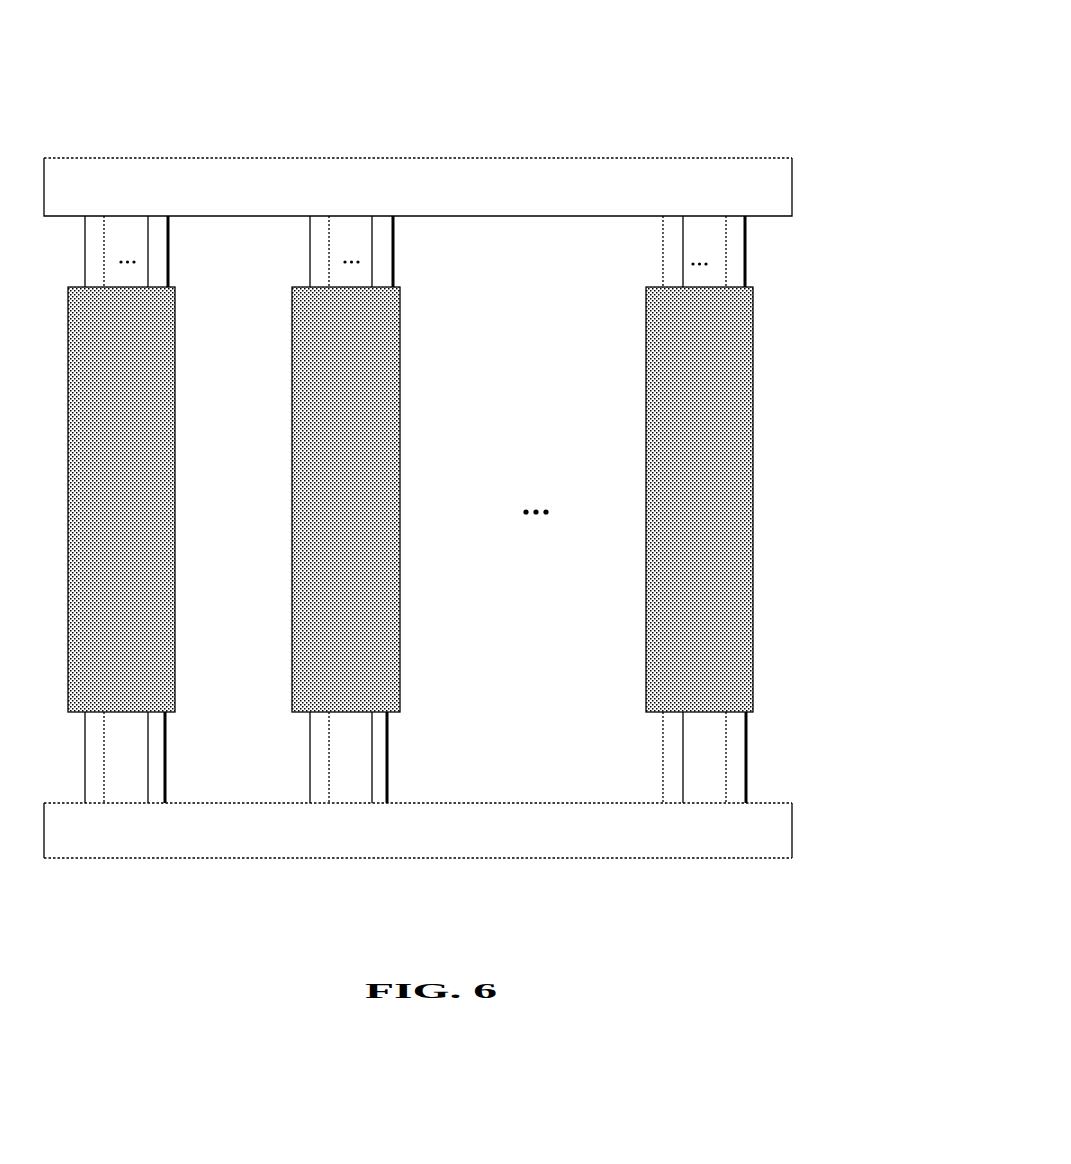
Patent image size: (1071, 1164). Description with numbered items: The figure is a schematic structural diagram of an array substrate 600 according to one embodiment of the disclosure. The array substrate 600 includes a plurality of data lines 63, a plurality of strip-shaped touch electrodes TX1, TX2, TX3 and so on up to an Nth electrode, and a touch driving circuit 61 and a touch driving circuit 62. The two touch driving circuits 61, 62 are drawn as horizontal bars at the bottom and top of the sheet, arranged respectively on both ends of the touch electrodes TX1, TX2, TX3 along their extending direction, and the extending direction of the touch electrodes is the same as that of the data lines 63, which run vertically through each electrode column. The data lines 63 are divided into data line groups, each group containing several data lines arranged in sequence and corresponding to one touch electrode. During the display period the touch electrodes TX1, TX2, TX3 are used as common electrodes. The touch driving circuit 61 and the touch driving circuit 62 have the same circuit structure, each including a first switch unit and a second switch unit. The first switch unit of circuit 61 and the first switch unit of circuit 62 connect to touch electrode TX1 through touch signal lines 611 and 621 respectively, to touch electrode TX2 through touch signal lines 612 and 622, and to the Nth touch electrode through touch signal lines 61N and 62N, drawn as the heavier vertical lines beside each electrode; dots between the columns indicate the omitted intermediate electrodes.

The touch sensor structure 600 is at (756, 35).
The touch driving circuit 62 is at (470, 158).
The touch driving circuit 61 is at (516, 858).
The touch signal line 621 is at (170, 258).
The touch signal line 622 is at (395, 258).
The touch signal line 62N is at (747, 258).
The touch signal line 611 is at (167, 728).
The touch signal line 612 is at (389, 728).
The touch signal line 61N is at (748, 728).
The data line 63 is at (310, 779).
The touch electrode TX1 is at (121, 499).
The touch electrode TX2 is at (346, 499).
The touch electrode TX3 is at (699, 499).